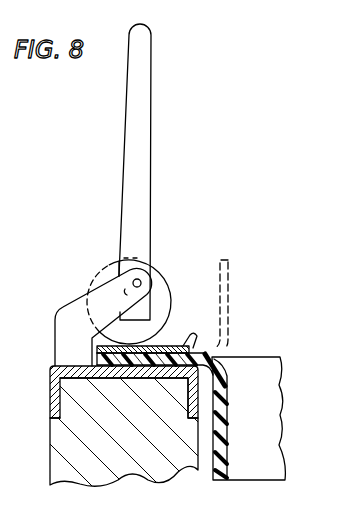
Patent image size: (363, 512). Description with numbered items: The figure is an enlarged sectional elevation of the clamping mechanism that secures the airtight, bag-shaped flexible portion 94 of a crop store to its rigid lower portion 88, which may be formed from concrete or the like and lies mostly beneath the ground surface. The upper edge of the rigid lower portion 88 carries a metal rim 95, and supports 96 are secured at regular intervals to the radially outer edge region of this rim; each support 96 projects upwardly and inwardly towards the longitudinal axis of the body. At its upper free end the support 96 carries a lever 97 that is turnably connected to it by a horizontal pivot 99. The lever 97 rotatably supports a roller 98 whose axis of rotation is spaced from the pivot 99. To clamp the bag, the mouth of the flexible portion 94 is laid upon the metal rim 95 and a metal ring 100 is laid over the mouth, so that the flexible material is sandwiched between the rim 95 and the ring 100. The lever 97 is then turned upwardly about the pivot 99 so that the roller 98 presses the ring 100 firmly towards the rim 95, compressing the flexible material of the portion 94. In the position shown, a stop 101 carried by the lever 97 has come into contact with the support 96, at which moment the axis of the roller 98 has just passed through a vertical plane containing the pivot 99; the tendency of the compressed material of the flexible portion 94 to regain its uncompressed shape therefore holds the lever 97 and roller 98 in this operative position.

The rigid lower portion 88 is at (63, 424).
The flexible portion 94 is at (230, 262).
The metal rim 95 is at (52, 373).
The support 96 is at (76, 302).
The lever 97 is at (135, 103).
The roller 98 is at (118, 262).
The pivot 99 is at (138, 278).
The metal ring 100 is at (177, 347).
The stop 101 is at (150, 312).